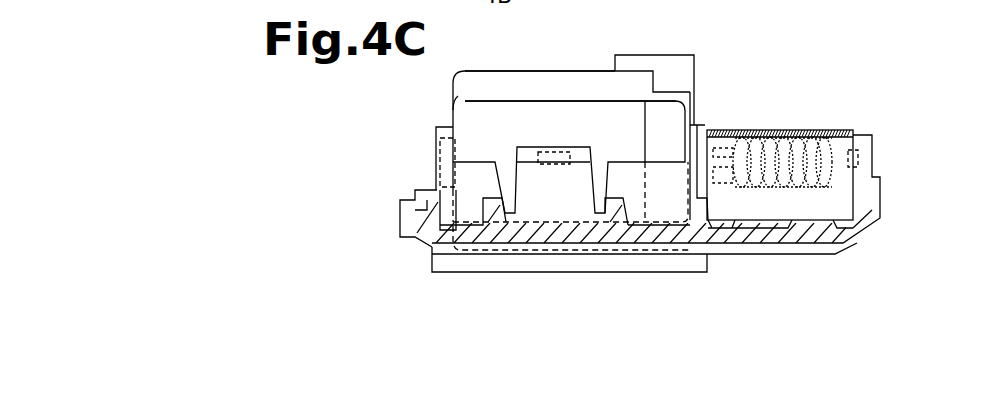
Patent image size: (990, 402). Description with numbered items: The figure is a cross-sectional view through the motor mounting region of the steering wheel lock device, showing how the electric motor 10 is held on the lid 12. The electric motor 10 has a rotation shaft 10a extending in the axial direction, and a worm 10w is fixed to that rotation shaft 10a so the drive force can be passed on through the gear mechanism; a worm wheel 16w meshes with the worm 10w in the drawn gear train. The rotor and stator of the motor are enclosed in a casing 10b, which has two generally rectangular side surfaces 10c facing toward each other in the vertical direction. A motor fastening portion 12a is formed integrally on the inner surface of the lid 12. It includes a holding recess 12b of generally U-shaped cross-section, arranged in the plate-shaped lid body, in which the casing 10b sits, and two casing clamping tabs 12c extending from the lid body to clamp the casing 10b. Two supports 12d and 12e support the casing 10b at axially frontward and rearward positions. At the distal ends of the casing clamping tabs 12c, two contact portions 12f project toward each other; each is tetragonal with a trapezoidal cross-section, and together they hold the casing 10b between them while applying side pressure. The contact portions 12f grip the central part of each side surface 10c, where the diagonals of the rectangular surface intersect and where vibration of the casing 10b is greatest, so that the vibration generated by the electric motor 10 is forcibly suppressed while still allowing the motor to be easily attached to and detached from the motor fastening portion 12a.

The electric motor 10 is at (521, 70).
The rotation shaft 10a is at (440, 162).
The casing 10b is at (483, 82).
The side surfaces 10c is at (510, 137).
The worm 10w is at (768, 128).
The lid 12 is at (884, 222).
The motor fastening portion 12a is at (699, 54).
The holding recess 12b is at (580, 242).
The casing clamping tabs 12c is at (542, 195).
The support 12d is at (446, 128).
The support 12e is at (698, 125).
The contact portions 12f is at (565, 144).
The coil 16w is at (818, 130).